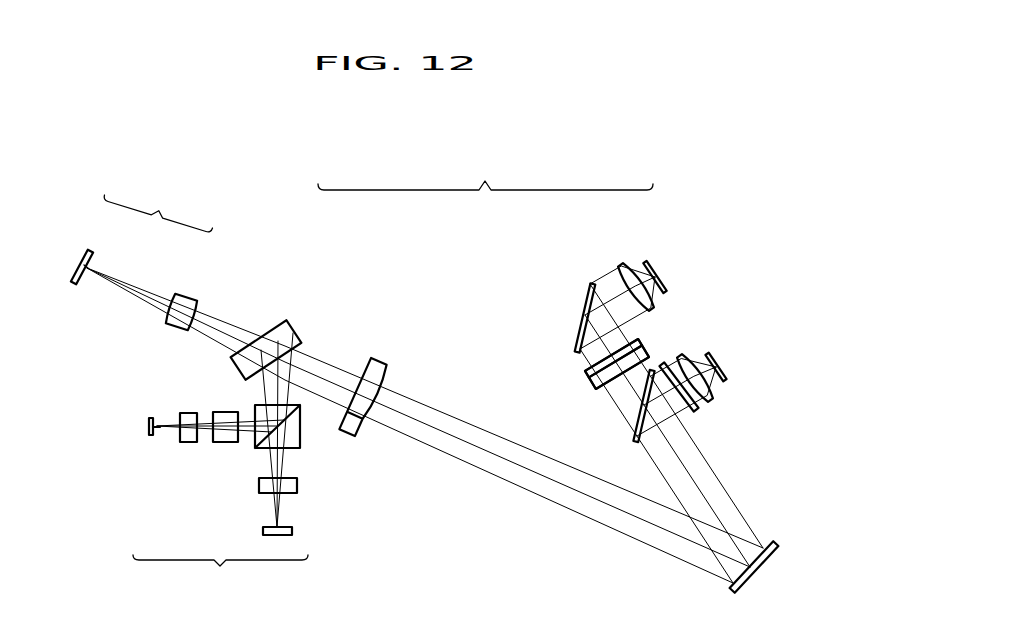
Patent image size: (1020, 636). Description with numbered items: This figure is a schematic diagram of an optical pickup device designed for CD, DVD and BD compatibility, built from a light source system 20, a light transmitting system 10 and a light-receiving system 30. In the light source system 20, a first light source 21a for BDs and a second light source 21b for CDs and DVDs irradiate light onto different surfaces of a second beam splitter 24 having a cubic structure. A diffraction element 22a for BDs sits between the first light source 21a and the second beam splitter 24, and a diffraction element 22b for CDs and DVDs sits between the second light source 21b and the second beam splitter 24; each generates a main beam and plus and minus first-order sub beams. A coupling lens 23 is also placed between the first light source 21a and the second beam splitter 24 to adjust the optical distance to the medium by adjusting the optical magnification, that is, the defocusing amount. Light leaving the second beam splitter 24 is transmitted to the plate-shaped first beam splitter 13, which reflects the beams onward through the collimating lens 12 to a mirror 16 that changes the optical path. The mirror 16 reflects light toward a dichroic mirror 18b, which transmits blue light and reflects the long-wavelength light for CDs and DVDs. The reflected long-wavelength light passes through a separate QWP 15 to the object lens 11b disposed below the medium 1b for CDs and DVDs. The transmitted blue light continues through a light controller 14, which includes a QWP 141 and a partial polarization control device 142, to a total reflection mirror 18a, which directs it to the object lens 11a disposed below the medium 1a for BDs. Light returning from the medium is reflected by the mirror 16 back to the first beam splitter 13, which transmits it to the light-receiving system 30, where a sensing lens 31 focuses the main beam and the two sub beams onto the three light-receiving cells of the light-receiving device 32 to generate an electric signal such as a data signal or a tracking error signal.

The light transmitting system 10 is at (485, 171).
The light source system 20 is at (220, 574).
The light-receiving system 30 is at (158, 208).
The light-receiving device 32 is at (88, 256).
The sensing lens 31 is at (190, 294).
The first beam splitter 13 is at (287, 333).
The collimating lens 12 is at (382, 359).
The second beam splitter 24 is at (258, 408).
The first light source 21a is at (149, 438).
The diffraction element for BDs 22a is at (189, 444).
The coupling lens 23 is at (228, 444).
The diffraction element for CDs and DVDs 22b is at (298, 484).
The second light source 21b is at (293, 531).
The total reflection mirror 18a is at (588, 316).
The object lens 11a is at (625, 267).
The medium 1a is at (661, 272).
The light controller 14 is at (660, 338).
The QWP 141 is at (586, 374).
The partial polarization control device 142 is at (591, 389).
The dichroic mirror 18b is at (638, 438).
The QWP 15 is at (696, 408).
The object lens 11b is at (712, 397).
The medium 1b is at (714, 362).
The mirror 16 is at (771, 541).